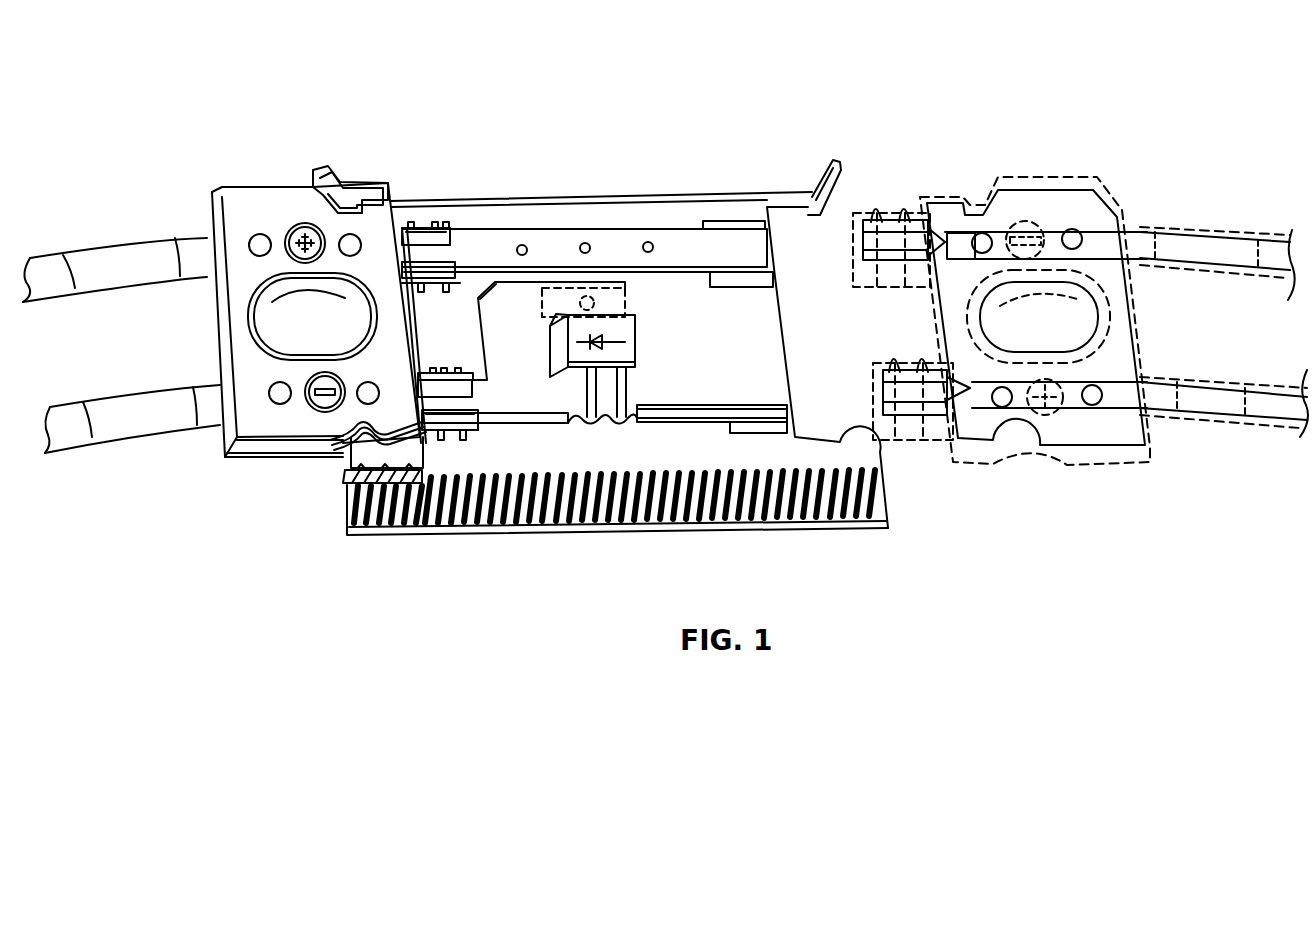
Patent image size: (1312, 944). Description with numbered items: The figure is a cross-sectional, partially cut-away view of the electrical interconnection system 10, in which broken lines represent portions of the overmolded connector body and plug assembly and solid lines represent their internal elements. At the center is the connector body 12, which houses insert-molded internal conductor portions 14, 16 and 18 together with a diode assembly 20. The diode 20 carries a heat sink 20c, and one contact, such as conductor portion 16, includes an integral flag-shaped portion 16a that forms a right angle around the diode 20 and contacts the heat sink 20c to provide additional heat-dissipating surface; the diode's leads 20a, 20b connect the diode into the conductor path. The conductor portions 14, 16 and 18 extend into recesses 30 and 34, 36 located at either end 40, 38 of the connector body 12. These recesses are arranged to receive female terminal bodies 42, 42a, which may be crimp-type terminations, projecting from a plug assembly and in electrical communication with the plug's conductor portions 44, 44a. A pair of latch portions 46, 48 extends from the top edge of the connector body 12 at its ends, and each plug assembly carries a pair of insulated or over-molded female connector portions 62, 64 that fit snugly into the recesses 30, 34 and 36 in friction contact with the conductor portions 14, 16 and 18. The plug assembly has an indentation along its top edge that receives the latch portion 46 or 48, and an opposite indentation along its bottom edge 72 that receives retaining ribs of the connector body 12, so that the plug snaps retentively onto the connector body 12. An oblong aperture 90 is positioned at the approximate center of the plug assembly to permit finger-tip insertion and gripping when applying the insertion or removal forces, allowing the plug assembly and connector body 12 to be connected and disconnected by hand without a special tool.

The electrical interconnection system 10 is at (146, 78).
The connector body 12 is at (612, 200).
The conductor portion 14 is at (633, 237).
The conductor portion 16 is at (517, 420).
The flag-shaped portion 16a is at (498, 298).
The conductor portion 18 is at (666, 412).
The diode assembly 20 is at (632, 340).
The diode lead 20a is at (588, 407).
The diode lead 20b is at (620, 392).
The heat sink 20c is at (613, 304).
The recess 30 is at (425, 222).
The recess 34 is at (713, 225).
The recess 36 is at (775, 435).
The end of connector body 38 is at (783, 330).
The end of connector body 40 is at (407, 325).
The female terminal body 42 is at (447, 427).
The female terminal body 42a is at (440, 235).
The conductor portion 44 is at (147, 415).
The conductor portion 44a is at (138, 248).
The latch portion 46 is at (826, 178).
The latch portion 48 is at (335, 180).
The female connector portion 62 is at (917, 412).
The female connector portion 64 is at (892, 233).
The bottom edge 72 is at (262, 456).
The aperture 90 is at (270, 330).